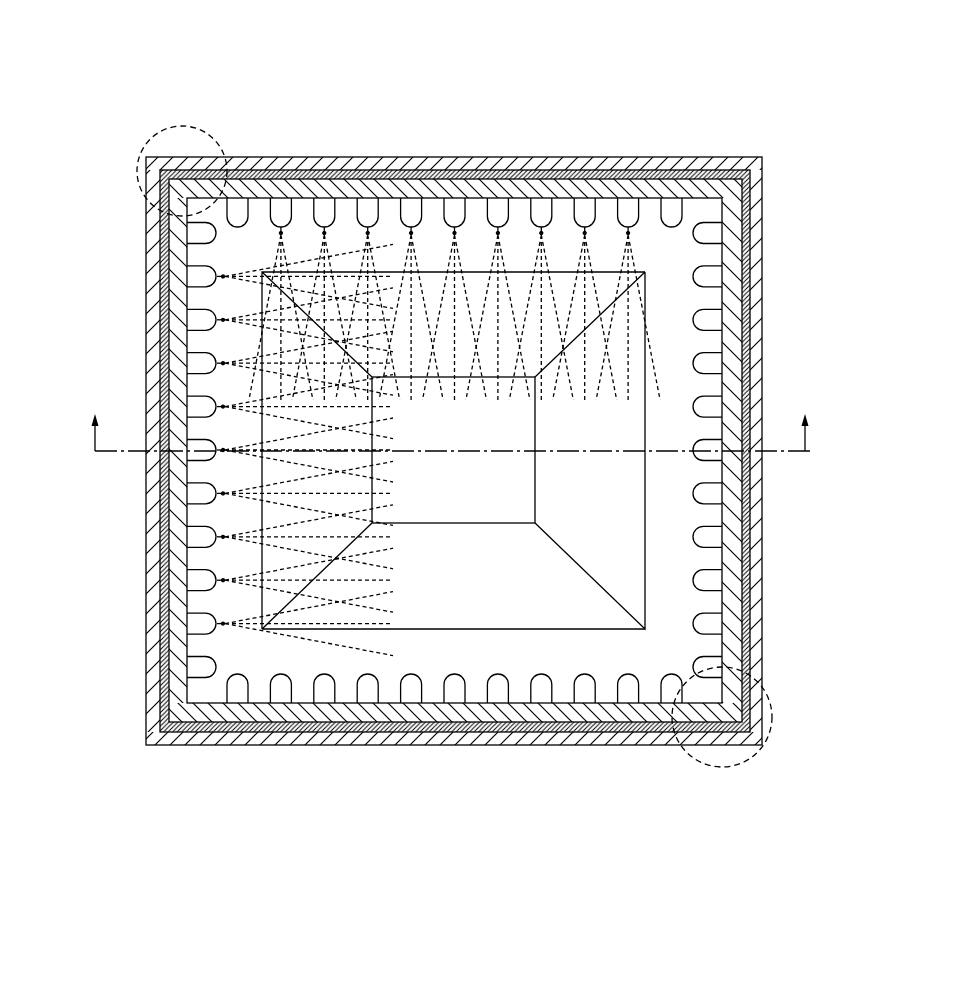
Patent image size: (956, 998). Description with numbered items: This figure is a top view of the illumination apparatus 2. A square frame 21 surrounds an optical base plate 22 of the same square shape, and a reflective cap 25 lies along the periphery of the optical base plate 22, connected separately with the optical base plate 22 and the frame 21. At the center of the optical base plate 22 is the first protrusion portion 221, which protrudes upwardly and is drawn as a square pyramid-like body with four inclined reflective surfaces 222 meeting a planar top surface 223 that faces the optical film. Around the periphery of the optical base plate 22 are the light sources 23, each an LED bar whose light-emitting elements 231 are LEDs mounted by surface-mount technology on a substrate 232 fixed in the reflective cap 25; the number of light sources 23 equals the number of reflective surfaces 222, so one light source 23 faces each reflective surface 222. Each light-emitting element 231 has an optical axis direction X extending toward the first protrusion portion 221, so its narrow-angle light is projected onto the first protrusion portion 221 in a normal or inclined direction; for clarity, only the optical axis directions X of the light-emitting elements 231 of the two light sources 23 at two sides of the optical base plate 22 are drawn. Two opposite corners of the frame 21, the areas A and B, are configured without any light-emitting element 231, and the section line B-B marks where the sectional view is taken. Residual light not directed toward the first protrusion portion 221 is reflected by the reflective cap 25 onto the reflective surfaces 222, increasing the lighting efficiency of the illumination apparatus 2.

The illumination apparatus 2 is at (178, 62).
The frame 21 is at (510, 165).
The optical base plate 22 is at (478, 531).
The first protrusion portion 221 is at (453, 576).
The reflective surface 222 is at (567, 614).
The top surface 223 is at (522, 483).
The light source 23 is at (700, 104).
The light-emitting element 231 is at (627, 206).
The substrate 232 is at (700, 188).
The reflective cap 25 is at (374, 172).
The area A is at (210, 126).
The area B is at (786, 678).
The optical axis direction X is at (630, 384).